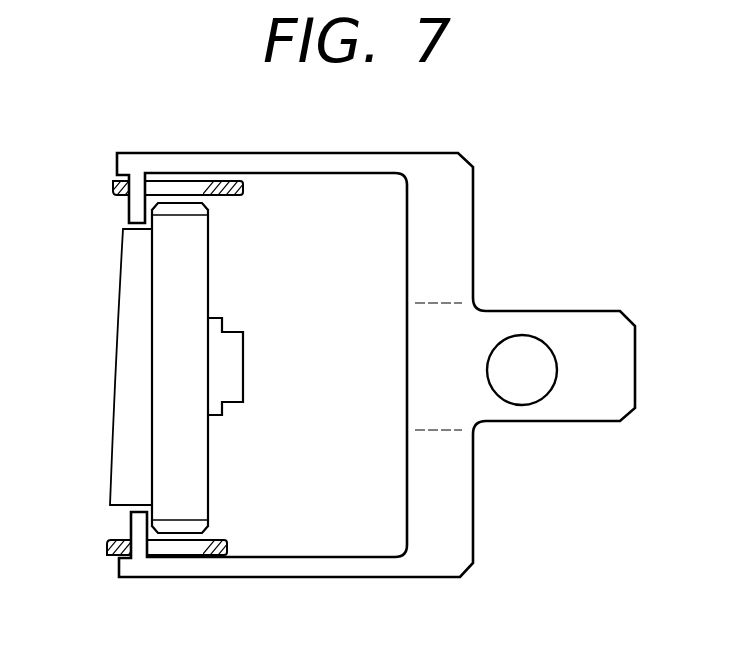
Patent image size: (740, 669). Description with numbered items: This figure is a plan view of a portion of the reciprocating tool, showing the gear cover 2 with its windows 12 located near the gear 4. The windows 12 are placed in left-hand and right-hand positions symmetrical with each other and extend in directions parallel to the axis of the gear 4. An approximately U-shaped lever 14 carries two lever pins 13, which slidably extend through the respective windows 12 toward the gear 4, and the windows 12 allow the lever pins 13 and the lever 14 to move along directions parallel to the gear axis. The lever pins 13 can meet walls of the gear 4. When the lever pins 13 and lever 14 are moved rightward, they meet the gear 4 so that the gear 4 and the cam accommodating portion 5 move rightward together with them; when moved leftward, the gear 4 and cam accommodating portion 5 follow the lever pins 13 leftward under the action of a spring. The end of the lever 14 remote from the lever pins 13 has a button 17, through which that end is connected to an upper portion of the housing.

The gear cover 2 is at (213, 547).
The gear 4 is at (172, 261).
The cam accommodating portion 5 is at (135, 358).
The windows 12 is at (165, 545).
The lever pins 13 is at (140, 203).
The lever 14 is at (465, 197).
The button 17 is at (527, 360).